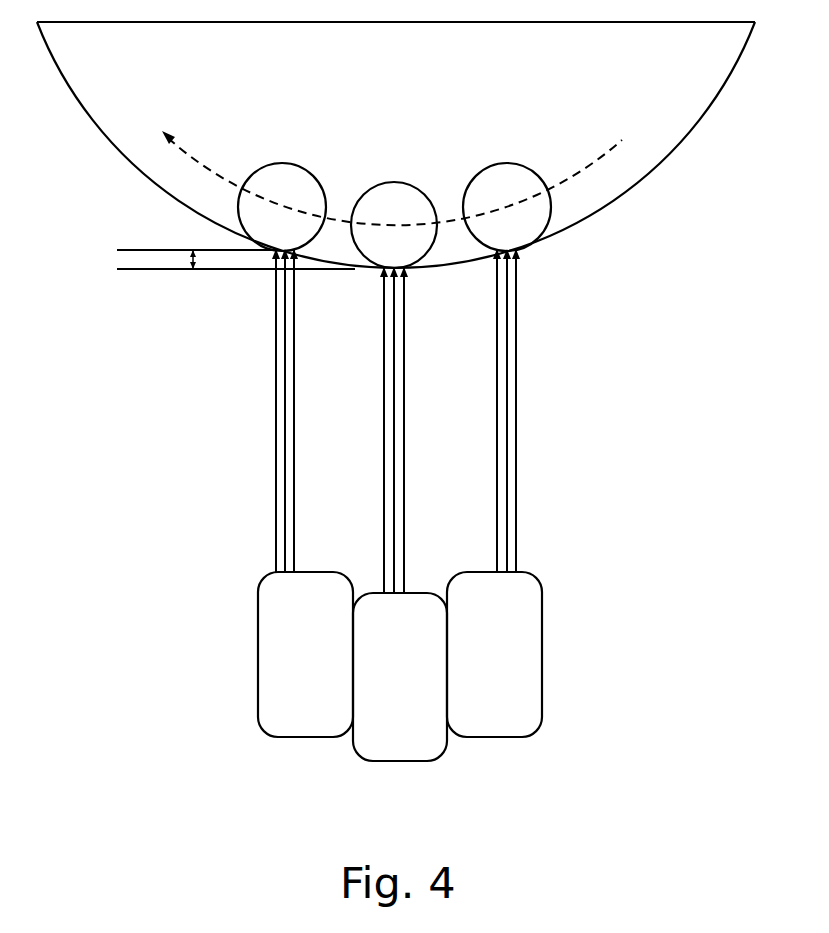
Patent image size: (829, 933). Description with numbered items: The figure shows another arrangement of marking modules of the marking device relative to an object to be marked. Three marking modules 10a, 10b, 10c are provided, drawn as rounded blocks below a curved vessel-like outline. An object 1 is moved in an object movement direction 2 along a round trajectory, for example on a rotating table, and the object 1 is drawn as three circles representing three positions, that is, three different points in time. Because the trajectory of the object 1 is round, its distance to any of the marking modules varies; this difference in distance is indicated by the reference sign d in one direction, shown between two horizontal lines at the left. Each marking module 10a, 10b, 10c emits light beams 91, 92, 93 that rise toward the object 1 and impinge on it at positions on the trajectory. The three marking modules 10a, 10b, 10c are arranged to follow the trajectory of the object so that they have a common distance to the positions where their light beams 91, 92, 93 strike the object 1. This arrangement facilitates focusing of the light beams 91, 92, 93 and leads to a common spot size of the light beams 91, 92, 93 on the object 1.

The object 1 is at (274, 240).
The object movement direction 2 is at (592, 162).
The difference in distance d is at (193, 260).
The light beam 91 is at (276, 353).
The light beam 92 is at (285, 393).
The light beam 93 is at (294, 430).
The marking module 10a is at (517, 669).
The marking module 10b is at (418, 691).
The marking module 10c is at (283, 669).